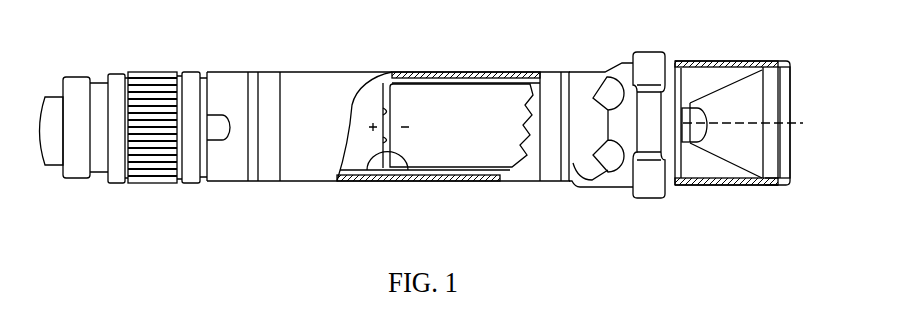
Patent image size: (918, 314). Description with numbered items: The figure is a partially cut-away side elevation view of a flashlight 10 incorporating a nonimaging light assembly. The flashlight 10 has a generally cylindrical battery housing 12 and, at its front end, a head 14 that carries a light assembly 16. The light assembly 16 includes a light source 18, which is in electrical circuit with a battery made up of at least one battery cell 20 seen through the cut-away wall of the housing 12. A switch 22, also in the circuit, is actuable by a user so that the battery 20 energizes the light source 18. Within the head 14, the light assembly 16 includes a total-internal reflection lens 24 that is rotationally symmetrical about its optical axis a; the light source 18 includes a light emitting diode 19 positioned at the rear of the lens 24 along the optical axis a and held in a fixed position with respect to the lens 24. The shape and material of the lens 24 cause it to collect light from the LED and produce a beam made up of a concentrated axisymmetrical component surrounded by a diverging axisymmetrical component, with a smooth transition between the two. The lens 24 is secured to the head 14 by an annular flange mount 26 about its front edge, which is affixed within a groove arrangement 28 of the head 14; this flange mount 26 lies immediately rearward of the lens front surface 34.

The flashlight 10 is at (273, 201).
The battery housing 12 is at (394, 72).
The head 14 is at (713, 187).
The light assembly 16 is at (710, 166).
The light source 18 is at (688, 97).
The light emitting diode 19 is at (687, 123).
The battery cell 20 is at (402, 183).
The switch 22 is at (53, 175).
The total-internal reflection lens 24 is at (730, 77).
The annular flange mount 26 is at (793, 172).
The groove arrangement 28 is at (773, 184).
The lens front surface 34 is at (784, 87).
The optical axis a is at (800, 121).